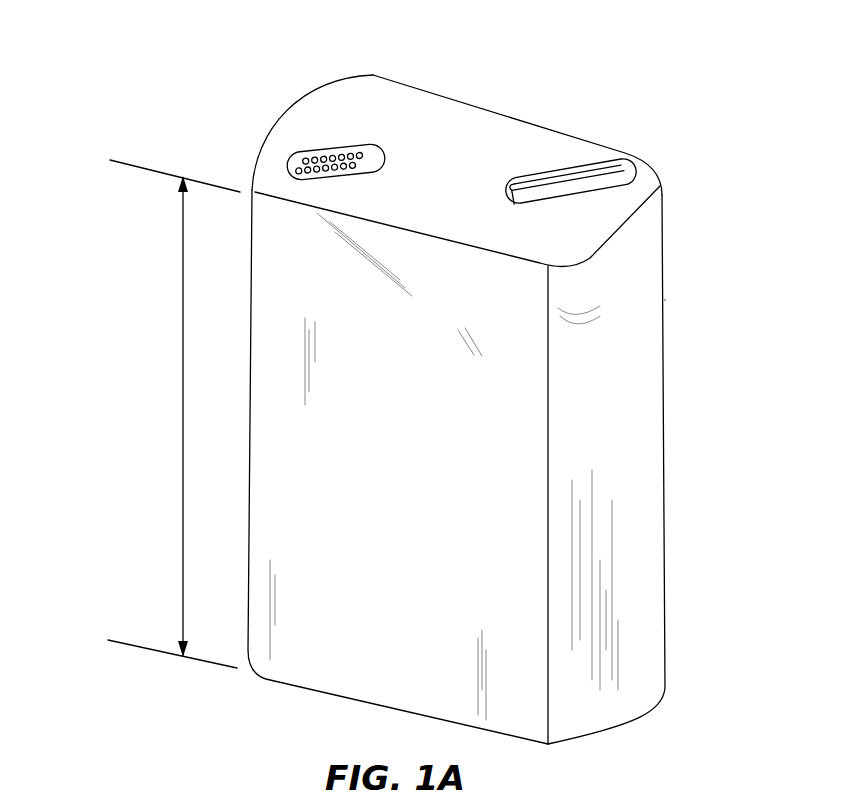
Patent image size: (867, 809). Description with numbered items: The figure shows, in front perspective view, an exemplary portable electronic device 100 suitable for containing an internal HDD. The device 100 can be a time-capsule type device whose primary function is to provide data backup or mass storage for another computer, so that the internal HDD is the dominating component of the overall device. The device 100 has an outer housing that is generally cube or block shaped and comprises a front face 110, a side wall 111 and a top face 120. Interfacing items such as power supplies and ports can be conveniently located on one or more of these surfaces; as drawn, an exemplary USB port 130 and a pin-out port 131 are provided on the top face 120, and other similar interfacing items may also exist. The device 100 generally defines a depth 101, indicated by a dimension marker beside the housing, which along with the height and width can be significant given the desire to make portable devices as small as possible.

The portable electronic device 100 is at (170, 74).
The depth 101 is at (183, 329).
The front face 110 is at (426, 453).
The side wall 111 is at (607, 425).
The top face 120 is at (625, 216).
The USB port 130 is at (628, 163).
The pin-out port 131 is at (373, 155).